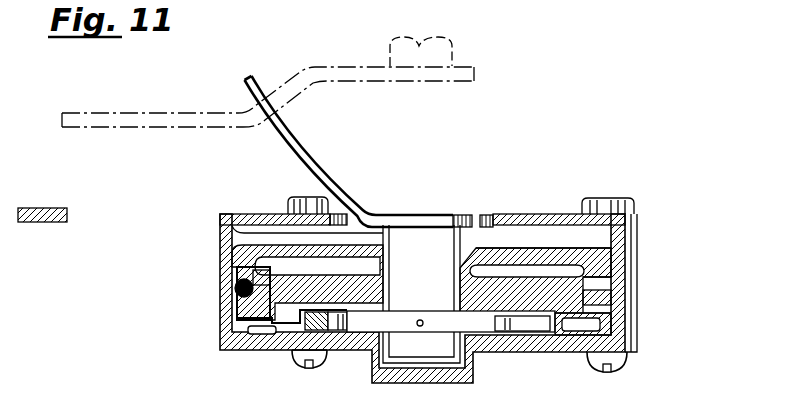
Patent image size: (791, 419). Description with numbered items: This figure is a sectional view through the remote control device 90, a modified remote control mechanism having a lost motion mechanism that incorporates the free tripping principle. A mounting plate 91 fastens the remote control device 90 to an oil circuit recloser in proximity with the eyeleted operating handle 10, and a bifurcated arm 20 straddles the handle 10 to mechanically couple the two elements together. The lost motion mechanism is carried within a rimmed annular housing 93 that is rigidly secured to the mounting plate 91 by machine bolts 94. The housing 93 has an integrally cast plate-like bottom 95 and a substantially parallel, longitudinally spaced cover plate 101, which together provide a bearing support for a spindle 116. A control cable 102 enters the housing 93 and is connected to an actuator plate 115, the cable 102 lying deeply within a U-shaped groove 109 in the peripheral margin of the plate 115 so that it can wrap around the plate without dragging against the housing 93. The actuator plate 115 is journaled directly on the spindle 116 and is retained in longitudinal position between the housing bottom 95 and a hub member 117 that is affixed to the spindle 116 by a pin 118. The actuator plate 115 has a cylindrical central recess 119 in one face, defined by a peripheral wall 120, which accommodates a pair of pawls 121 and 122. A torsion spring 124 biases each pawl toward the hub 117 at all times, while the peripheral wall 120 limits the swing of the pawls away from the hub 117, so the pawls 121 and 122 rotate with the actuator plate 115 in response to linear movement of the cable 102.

The eyeleted operating handle 10 is at (197, 112).
The bifurcated arm 20 is at (322, 172).
The remote control device 90 is at (650, 246).
The mounting plate 91 is at (42, 208).
The rimmed annular housing 93 is at (232, 247).
The machine bolts 94 is at (293, 207).
The bottom 95 is at (540, 248).
The cover plate 101 is at (232, 340).
The control cable 102 is at (237, 298).
The U-shaped groove 109 is at (590, 297).
The actuator plate 115 is at (235, 320).
The spindle 116 is at (421, 294).
The hub member 117 is at (438, 318).
The pin 118 is at (420, 327).
The cylindrical central recess 119 is at (535, 310).
The peripheral wall 120 is at (538, 335).
The pawl 121 is at (336, 322).
The pawl 122 is at (512, 333).
The torsion spring 124 is at (288, 350).